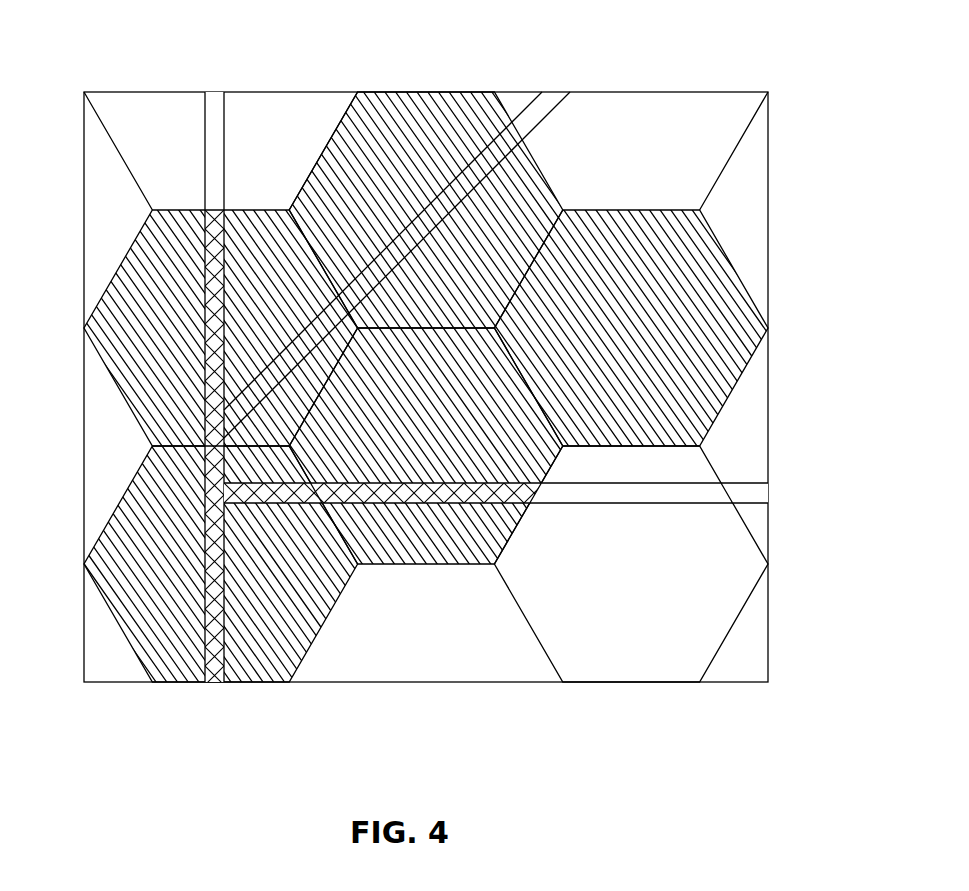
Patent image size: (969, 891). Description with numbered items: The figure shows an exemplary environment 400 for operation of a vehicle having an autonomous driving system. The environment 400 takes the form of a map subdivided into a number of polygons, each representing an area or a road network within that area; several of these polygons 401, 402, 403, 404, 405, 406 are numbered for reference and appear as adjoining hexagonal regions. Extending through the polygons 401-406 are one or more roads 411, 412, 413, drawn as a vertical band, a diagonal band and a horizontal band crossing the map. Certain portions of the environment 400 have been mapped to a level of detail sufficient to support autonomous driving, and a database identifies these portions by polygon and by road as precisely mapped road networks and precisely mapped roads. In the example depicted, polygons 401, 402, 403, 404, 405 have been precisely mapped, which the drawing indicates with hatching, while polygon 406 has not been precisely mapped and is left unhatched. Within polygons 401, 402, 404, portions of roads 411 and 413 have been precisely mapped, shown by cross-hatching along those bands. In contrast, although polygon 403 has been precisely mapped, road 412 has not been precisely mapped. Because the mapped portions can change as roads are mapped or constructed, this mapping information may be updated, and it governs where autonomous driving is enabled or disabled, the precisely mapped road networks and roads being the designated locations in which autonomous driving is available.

The environment 400 is at (679, 68).
The polygon 401 is at (143, 250).
The polygon 402 is at (141, 486).
The polygon 403 is at (338, 144).
The polygon 404 is at (419, 565).
The polygon 405 is at (646, 211).
The polygon 406 is at (533, 618).
The road 411 is at (203, 347).
The road 412 is at (423, 208).
The road 413 is at (402, 482).